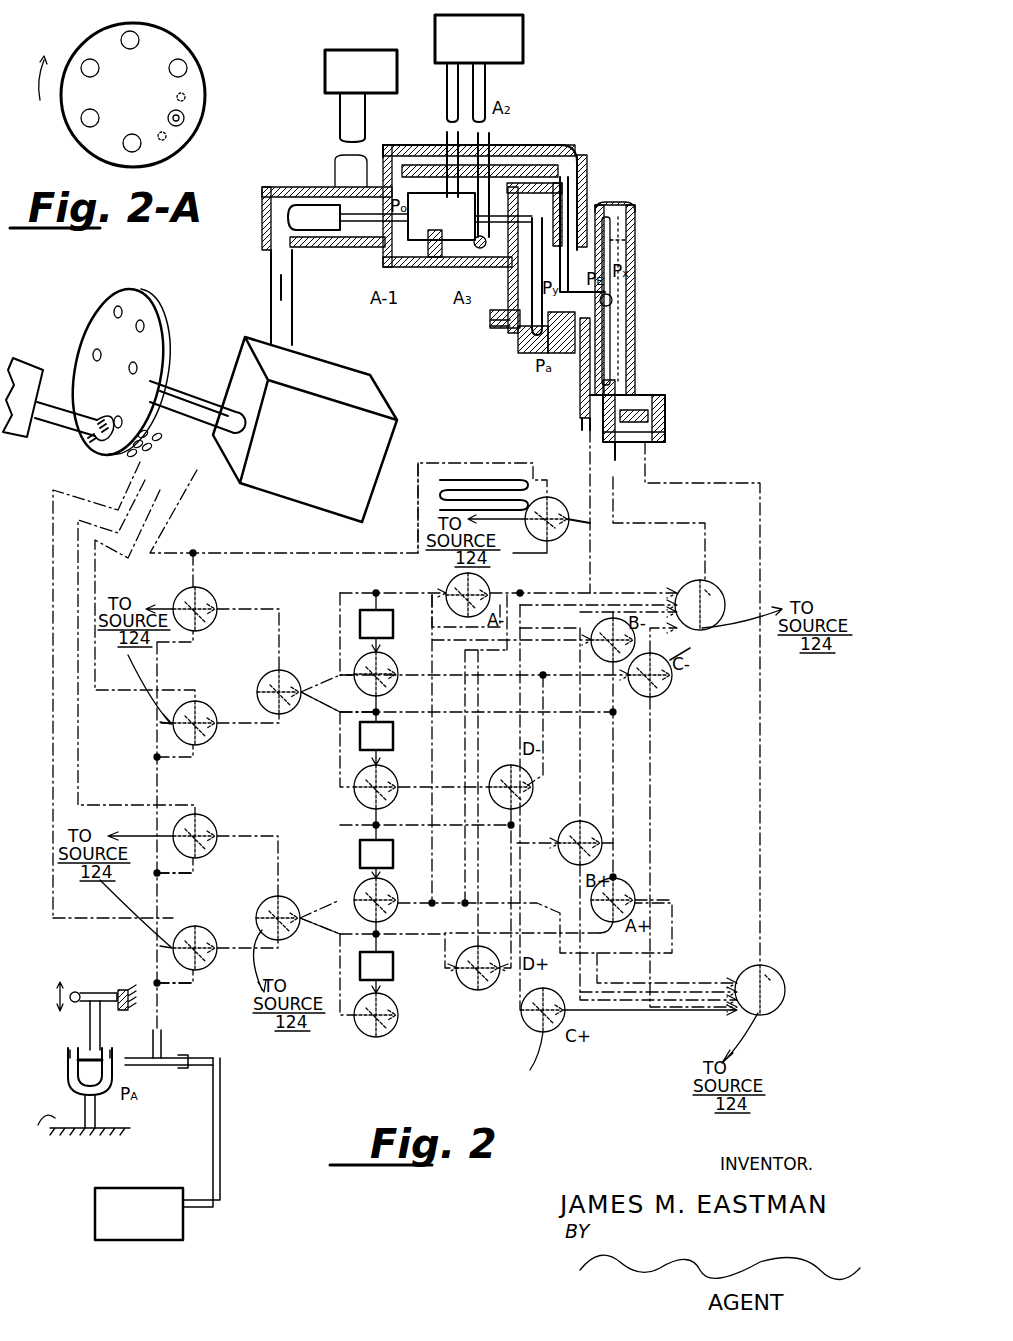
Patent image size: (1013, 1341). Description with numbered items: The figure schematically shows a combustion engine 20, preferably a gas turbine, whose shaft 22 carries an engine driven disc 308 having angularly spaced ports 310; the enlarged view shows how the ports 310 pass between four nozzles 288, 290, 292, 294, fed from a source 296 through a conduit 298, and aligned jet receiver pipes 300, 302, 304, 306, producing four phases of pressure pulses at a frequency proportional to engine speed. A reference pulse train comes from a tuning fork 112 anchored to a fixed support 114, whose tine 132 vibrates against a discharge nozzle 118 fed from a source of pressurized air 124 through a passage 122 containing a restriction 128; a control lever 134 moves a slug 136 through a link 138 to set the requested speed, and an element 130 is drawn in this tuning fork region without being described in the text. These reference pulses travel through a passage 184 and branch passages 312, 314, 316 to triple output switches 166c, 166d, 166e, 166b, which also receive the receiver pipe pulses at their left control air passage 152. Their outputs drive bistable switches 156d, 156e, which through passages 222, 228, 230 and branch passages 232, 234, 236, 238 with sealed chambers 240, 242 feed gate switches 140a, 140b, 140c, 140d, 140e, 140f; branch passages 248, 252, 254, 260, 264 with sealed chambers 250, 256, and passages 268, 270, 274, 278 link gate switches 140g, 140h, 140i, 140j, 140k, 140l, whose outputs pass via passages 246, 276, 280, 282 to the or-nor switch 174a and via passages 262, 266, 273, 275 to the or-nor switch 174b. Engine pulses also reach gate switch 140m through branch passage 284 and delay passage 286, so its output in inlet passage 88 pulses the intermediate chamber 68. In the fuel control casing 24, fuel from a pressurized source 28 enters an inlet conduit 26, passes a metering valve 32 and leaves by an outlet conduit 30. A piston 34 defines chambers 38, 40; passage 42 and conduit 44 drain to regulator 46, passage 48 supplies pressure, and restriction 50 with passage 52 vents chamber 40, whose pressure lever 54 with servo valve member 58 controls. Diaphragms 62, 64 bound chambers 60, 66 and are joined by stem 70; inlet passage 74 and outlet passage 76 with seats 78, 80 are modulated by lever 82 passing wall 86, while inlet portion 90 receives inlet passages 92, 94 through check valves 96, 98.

In FIG. 2, the combustion engine 20 is at (328, 468).
In FIG. 2, the shaft 22 is at (175, 394).
In FIG. 2, the casing 24 is at (585, 160).
In FIG. 2, the inlet conduit 26 is at (345, 172).
In FIG. 2, the pressurized source of fuel 28 is at (365, 86).
In FIG. 2, the outlet conduit 30 is at (270, 318).
In FIG. 2, the metering valve 32 is at (320, 240).
In FIG. 2, the multidiameter fluid pressure actuated piston 34 is at (297, 270).
In FIG. 2, the fluid chamber 38 is at (455, 195).
In FIG. 2, the fluid chamber 40 is at (497, 175).
In FIG. 2, the passage 42 is at (443, 160).
In FIG. 2, the conduit 44 is at (485, 80).
In FIG. 2, the fluid pressure regulator 46 is at (523, 38).
In FIG. 2, the passage 48 is at (447, 80).
In FIG. 2, the fixed area restriction 50 is at (560, 150).
In FIG. 2, the passage 52 is at (520, 165).
In FIG. 2, the lever 54 is at (570, 210).
In FIG. 2, the servo valve member 58 is at (588, 172).
In FIG. 2, the chamber 60 is at (583, 360).
In FIG. 2, the diaphragm 62 is at (612, 257).
In FIG. 2, the second diaphragm 64 is at (612, 230).
In FIG. 2, the chamber 66 is at (620, 290).
In FIG. 2, the intermediate chamber 68 is at (625, 208).
In FIG. 2, the stem 70 is at (612, 307).
In FIG. 2, the inlet passage 74 is at (512, 330).
In FIG. 2, the outlet passage 76 is at (576, 265).
In FIG. 2, the valve seat 78 is at (525, 318).
In FIG. 2, the valve seat 80 is at (535, 355).
In FIG. 2, the lever 82 is at (512, 302).
In FIG. 2, the wall 86 is at (490, 228).
In FIG. 2, the inlet passage 88 is at (582, 422).
In FIG. 2, the inlet portion 90 is at (640, 375).
In FIG. 2, the inlet passage 92 is at (659, 511).
In FIG. 2, the inlet passage 94 is at (650, 447).
In FIG. 2, the check valve 96 is at (648, 398).
In FIG. 2, the check valve 98 is at (650, 427).
In FIG. 2, the tuning fork 112 is at (98, 1114).
In FIG. 2, the fixed support 114 is at (66, 1131).
In FIG. 2, the discharge nozzle 118 is at (120, 1010).
In FIG. 2, the passage 122 is at (222, 1132).
In FIG. 2, the source of pressurized air 124 is at (165, 1244).
In FIG. 2, the restriction 128 is at (190, 1062).
In FIG. 2, the cup 130 is at (66, 1072).
In FIG. 2, the tine 132 is at (105, 1067).
In FIG. 2, the engine control lever 134 is at (88, 990).
In FIG. 2, the tuning fork slug 136 is at (70, 1050).
In FIG. 2, the link 138 is at (88, 1025).
In FIG. 2, the gate switch 140a is at (398, 662).
In FIG. 2, the gate switch 140b is at (357, 798).
In FIG. 2, the gate switch 140c is at (395, 892).
In FIG. 2, the gate switch 140d is at (378, 1038).
In FIG. 2, the gate switch 140e is at (445, 595).
In FIG. 2, the gate switch 140f is at (617, 608).
In FIG. 2, the gate switch 140g is at (495, 775).
In FIG. 2, the gate switch 140h is at (672, 683).
In FIG. 2, the gate switch 140i is at (468, 988).
In FIG. 2, the gate switch 140j is at (582, 818).
In FIG. 2, the gate switch 140k is at (632, 885).
In FIG. 2, the gate switch 140l is at (554, 1035).
In FIG. 2, the gate switch 140m is at (555, 496).
In FIG. 2, the left control air passage 152 is at (565, 525).
In FIG. 2, the bistable switch 156d is at (262, 680).
In FIG. 2, the bistable switch 156e is at (286, 900).
In FIG. 2, the triple output fluidic switch 166b is at (228, 912).
In FIG. 2, the triple output fluidic switch 166c is at (226, 600).
In FIG. 2, the triple output fluidic switch 166d is at (215, 735).
In FIG. 2, the triple output fluidic switch 166e is at (212, 818).
In FIG. 2, the or-nor switch 174a is at (712, 585).
In FIG. 2, the or-nor switch 174b is at (786, 1012).
In FIG. 2, the passage 184 is at (163, 1042).
In FIG. 2, the passage 222 is at (330, 715).
In FIG. 2, the passage 228 is at (336, 919).
In FIG. 2, the passage 230 is at (262, 937).
In FIG. 2, the branch passage 232 is at (378, 592).
In FIG. 2, the branch passage 234 is at (385, 712).
In FIG. 2, the branch passage 236 is at (340, 593).
In FIG. 2, the branch passage 238 is at (380, 724).
In FIG. 2, the sealed chamber 240 is at (377, 622).
In FIG. 2, the sealed chamber 242 is at (377, 730).
In FIG. 2, the passage 246 is at (665, 605).
In FIG. 2, the branch passage 248 is at (380, 827).
In FIG. 2, the sealed chamber 250 is at (377, 843).
In FIG. 2, the branch passage 252 is at (650, 772).
In FIG. 2, the branch passage 254 is at (380, 952).
In FIG. 2, the sealed chamber 256 is at (377, 957).
In FIG. 2, the branch passage 260 is at (548, 737).
In FIG. 2, the passage 262 is at (700, 985).
In FIG. 2, the branch passage 264 is at (640, 737).
In FIG. 2, the passage 266 is at (645, 977).
In FIG. 2, the passage 268 is at (405, 907).
In FIG. 2, the passage 270 is at (398, 788).
In FIG. 2, the passage 273 is at (670, 1014).
In FIG. 2, the passage 274 is at (474, 662).
In FIG. 2, the passage 275 is at (640, 1020).
In FIG. 2, the passage 276 is at (676, 650).
In FIG. 2, the branch passage 278 is at (480, 702).
In FIG. 2, the passage 280 is at (583, 607).
In FIG. 2, the passage 282 is at (705, 585).
In FIG. 2, the branch passage 284 is at (486, 465).
In FIG. 2, the relatively long passage 286 is at (445, 478).
In FIG. 2, the nozzle 288 is at (80, 452).
In FIG. 2, the nozzle 290 is at (92, 442).
In FIG. 2, the nozzle 292 is at (96, 430).
In FIG. 2, the nozzle 294 is at (108, 418).
In FIG. 2, the source 296 is at (27, 397).
In FIG. 2, the conduit 298 is at (52, 400).
In FIG. 2A, the jet receiver pipe 300 is at (138, 146).
In FIG. 2, the jet receiver pipe 300 is at (130, 458).
In FIG. 2A, the jet receiver pipe 302 is at (166, 136).
In FIG. 2, the jet receiver pipe 302 is at (140, 448).
In FIG. 2A, the jet receiver pipe 304 is at (183, 116).
In FIG. 2, the jet receiver pipe 304 is at (152, 450).
In FIG. 2A, the jet receiver pipe 306 is at (184, 95).
In FIG. 2, the jet receiver pipe 306 is at (155, 435).
In FIG. 2A, the engine driven disc 308 is at (165, 40).
In FIG. 2, the engine driven disc 308 is at (140, 300).
In FIG. 2A, the ports 310 is at (88, 115).
In FIG. 2, the ports 310 is at (130, 365).
In FIG. 2, the branch passage 312 is at (162, 760).
In FIG. 2, the branch passage 314 is at (190, 872).
In FIG. 2, the branch passage 316 is at (195, 986).